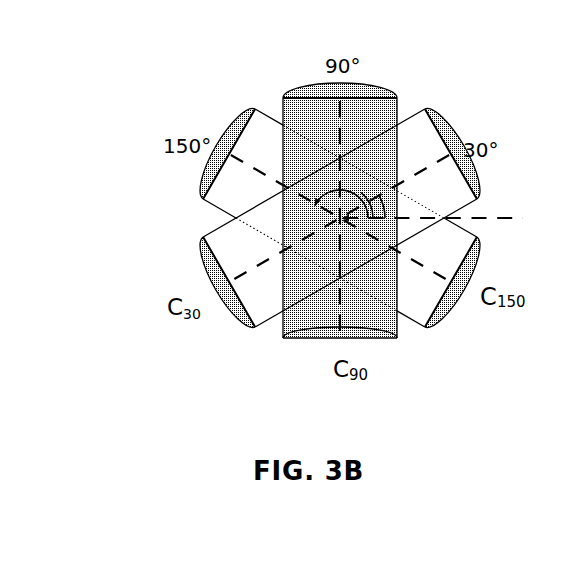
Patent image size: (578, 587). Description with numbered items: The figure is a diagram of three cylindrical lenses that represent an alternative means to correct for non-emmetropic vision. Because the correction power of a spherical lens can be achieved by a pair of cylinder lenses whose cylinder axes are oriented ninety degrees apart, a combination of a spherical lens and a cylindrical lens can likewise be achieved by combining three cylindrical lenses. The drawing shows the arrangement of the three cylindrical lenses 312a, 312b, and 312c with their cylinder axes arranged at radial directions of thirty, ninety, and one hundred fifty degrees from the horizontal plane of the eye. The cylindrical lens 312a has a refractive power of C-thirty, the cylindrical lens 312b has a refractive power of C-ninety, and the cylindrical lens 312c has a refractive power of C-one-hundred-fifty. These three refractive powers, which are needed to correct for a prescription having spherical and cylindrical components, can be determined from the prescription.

The cylindrical lens 312a is at (198, 202).
The cylindrical lens 312b is at (289, 93).
The cylindrical lens 312c is at (443, 131).